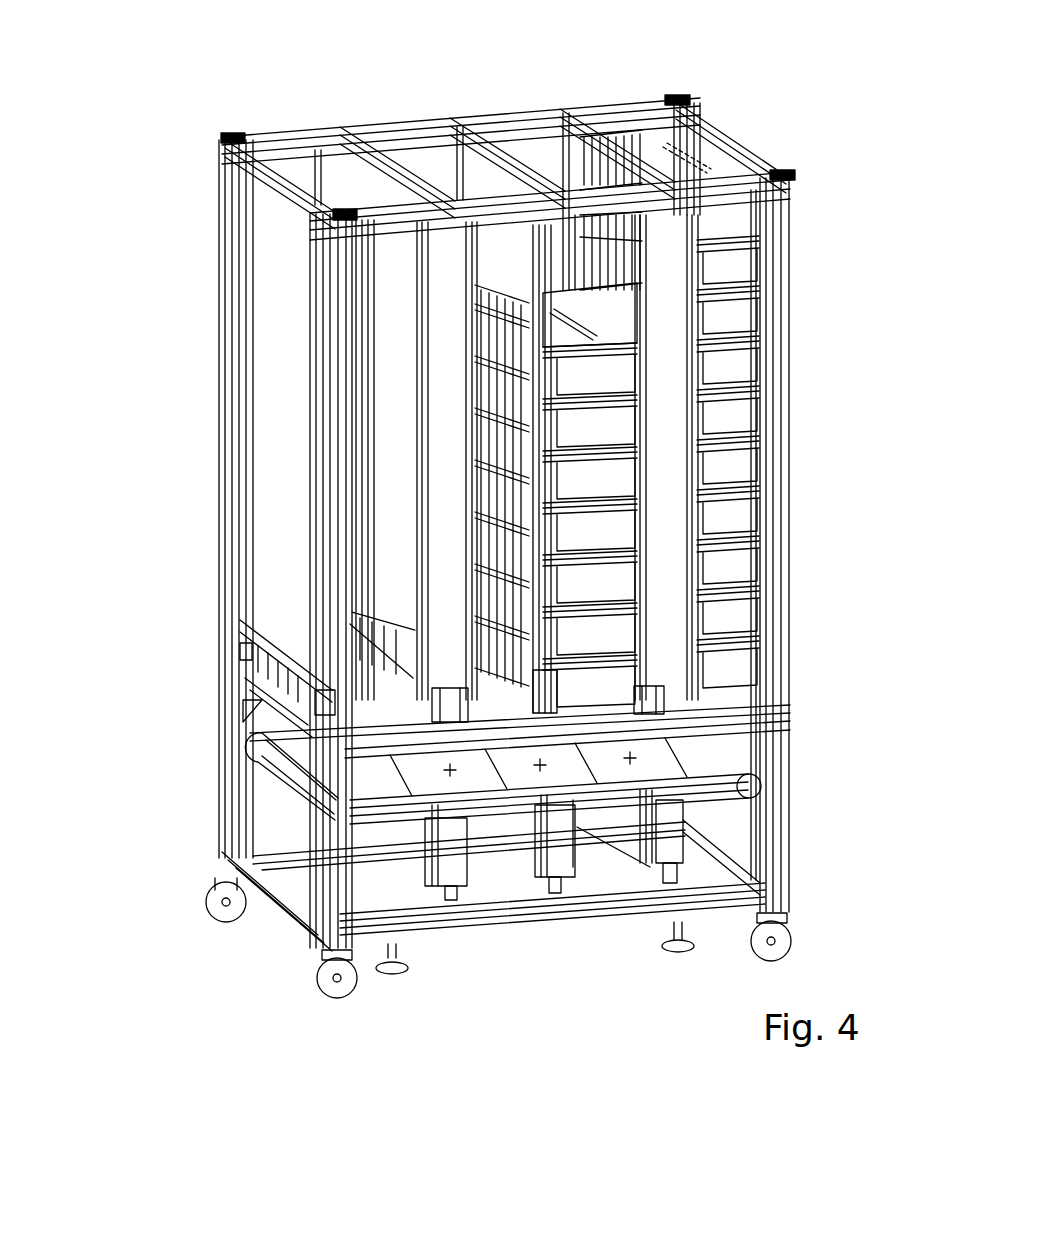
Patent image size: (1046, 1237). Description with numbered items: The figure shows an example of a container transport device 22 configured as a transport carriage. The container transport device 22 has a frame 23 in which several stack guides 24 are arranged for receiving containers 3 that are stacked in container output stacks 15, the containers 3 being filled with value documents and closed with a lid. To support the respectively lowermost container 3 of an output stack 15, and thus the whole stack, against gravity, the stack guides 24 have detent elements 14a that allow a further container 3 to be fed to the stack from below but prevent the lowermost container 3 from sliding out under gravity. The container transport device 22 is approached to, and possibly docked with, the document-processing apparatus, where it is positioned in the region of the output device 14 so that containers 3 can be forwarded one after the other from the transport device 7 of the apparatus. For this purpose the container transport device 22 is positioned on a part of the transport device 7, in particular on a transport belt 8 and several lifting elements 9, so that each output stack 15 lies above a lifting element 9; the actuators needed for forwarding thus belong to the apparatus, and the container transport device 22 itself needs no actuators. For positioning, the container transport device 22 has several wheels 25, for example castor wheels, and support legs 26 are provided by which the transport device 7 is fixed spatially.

The container transport device 22 is at (135, 132).
The container output stack 15 is at (746, 117).
The container 3 is at (743, 264).
The frame 23 is at (798, 423).
The stack guide 24 is at (775, 540).
The detent element 14a is at (236, 646).
The transport device 7 is at (178, 747).
The output device 14 is at (271, 820).
The transport belt 8 is at (747, 767).
The lifting element 9 is at (677, 808).
The wheel 25 is at (348, 987).
The support leg 26 is at (402, 963).